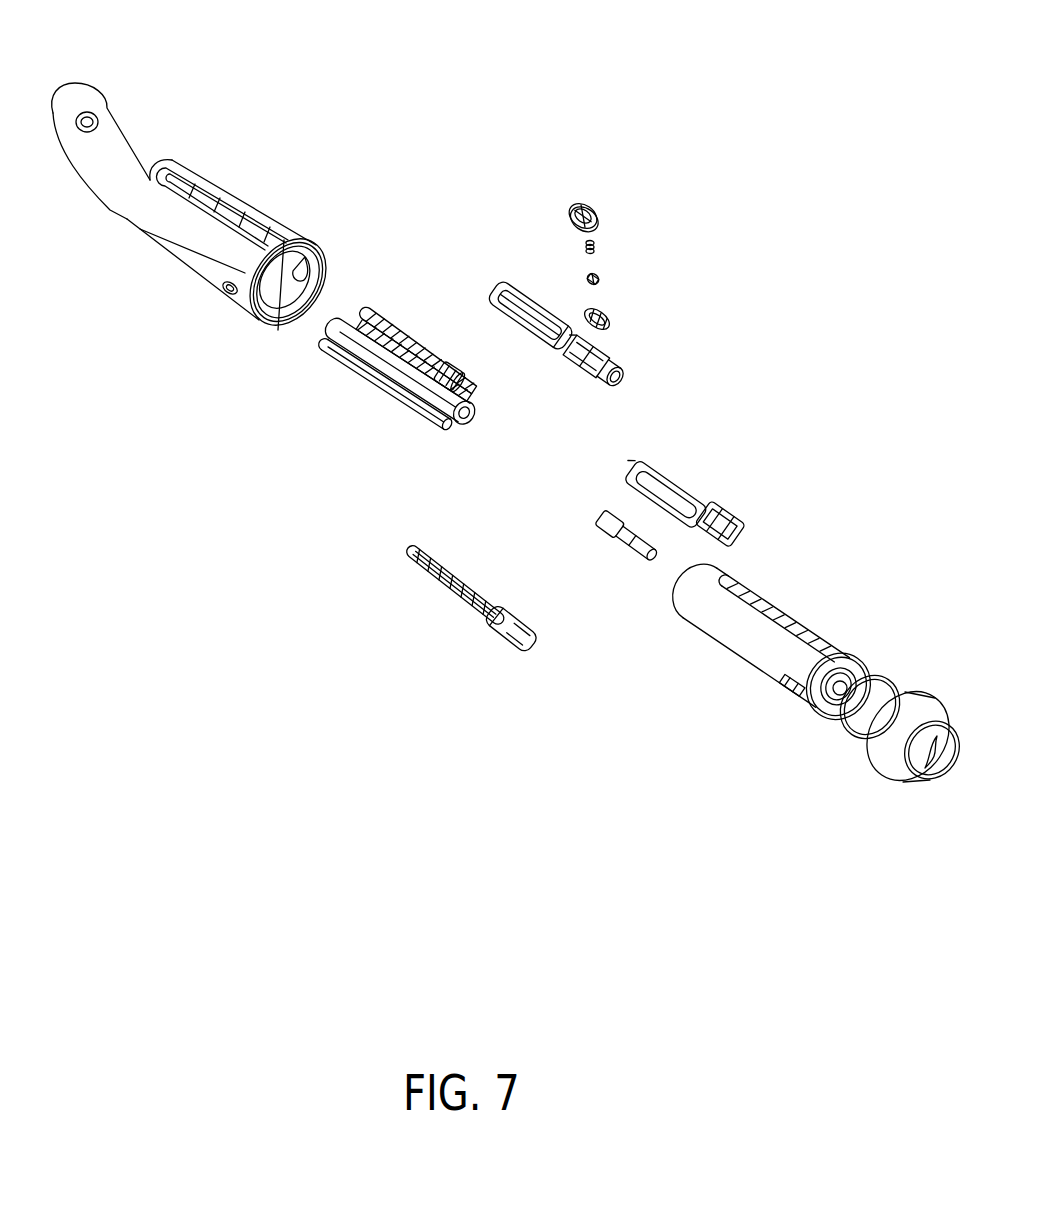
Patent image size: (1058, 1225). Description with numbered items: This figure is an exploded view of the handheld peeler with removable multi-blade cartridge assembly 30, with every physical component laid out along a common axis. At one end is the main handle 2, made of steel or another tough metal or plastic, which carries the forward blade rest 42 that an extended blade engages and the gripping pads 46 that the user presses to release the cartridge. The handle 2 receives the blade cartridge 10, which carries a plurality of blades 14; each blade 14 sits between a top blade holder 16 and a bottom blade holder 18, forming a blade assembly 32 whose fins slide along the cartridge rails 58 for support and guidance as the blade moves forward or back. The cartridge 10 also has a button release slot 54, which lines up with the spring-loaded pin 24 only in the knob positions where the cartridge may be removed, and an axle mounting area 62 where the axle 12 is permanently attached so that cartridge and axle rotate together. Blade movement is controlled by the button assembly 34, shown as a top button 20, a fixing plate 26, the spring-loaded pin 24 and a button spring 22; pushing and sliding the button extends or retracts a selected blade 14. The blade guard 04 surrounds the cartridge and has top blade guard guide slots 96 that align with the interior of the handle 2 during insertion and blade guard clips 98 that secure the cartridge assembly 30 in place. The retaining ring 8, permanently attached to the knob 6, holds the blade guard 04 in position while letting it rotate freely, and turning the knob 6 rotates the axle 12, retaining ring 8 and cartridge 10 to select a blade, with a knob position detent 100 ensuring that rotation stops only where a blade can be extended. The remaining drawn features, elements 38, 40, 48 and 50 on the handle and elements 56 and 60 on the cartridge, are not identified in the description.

The main handle 2 is at (172, 217).
The handle arm 38 is at (62, 82).
The forward blade rest 42 is at (94, 114).
The slot 48 is at (206, 183).
The body side 40 is at (210, 272).
The gripping pads 46 is at (231, 294).
The end cap 50 is at (283, 248).
The blade cartridge 10 is at (420, 400).
The button release slot 54 is at (360, 372).
The threaded member 56 is at (373, 325).
The cartridge rails 58 is at (410, 335).
The end member 60 is at (441, 375).
The axle mounting area 62 is at (462, 414).
The blade 14 is at (545, 338).
The top blade holder 16 is at (575, 366).
The bottom blade holder 18 is at (616, 378).
The top button 20 is at (602, 215).
The button spring 22 is at (597, 248).
The spring loaded pin 24 is at (602, 281).
The fixing plate 26 is at (613, 320).
The button assembly 34 is at (714, 258).
The blade assembly 32 is at (512, 272).
The axle 12 is at (618, 530).
The blade guard 04 is at (748, 630).
The top blade guard guide slots 96 is at (800, 640).
The blade guard clips 98 is at (790, 690).
The knob position detent 100 is at (812, 692).
The retaining ring 8 is at (842, 714).
The knob 6 is at (888, 756).
The blade cartridge assembly 30 is at (653, 675).